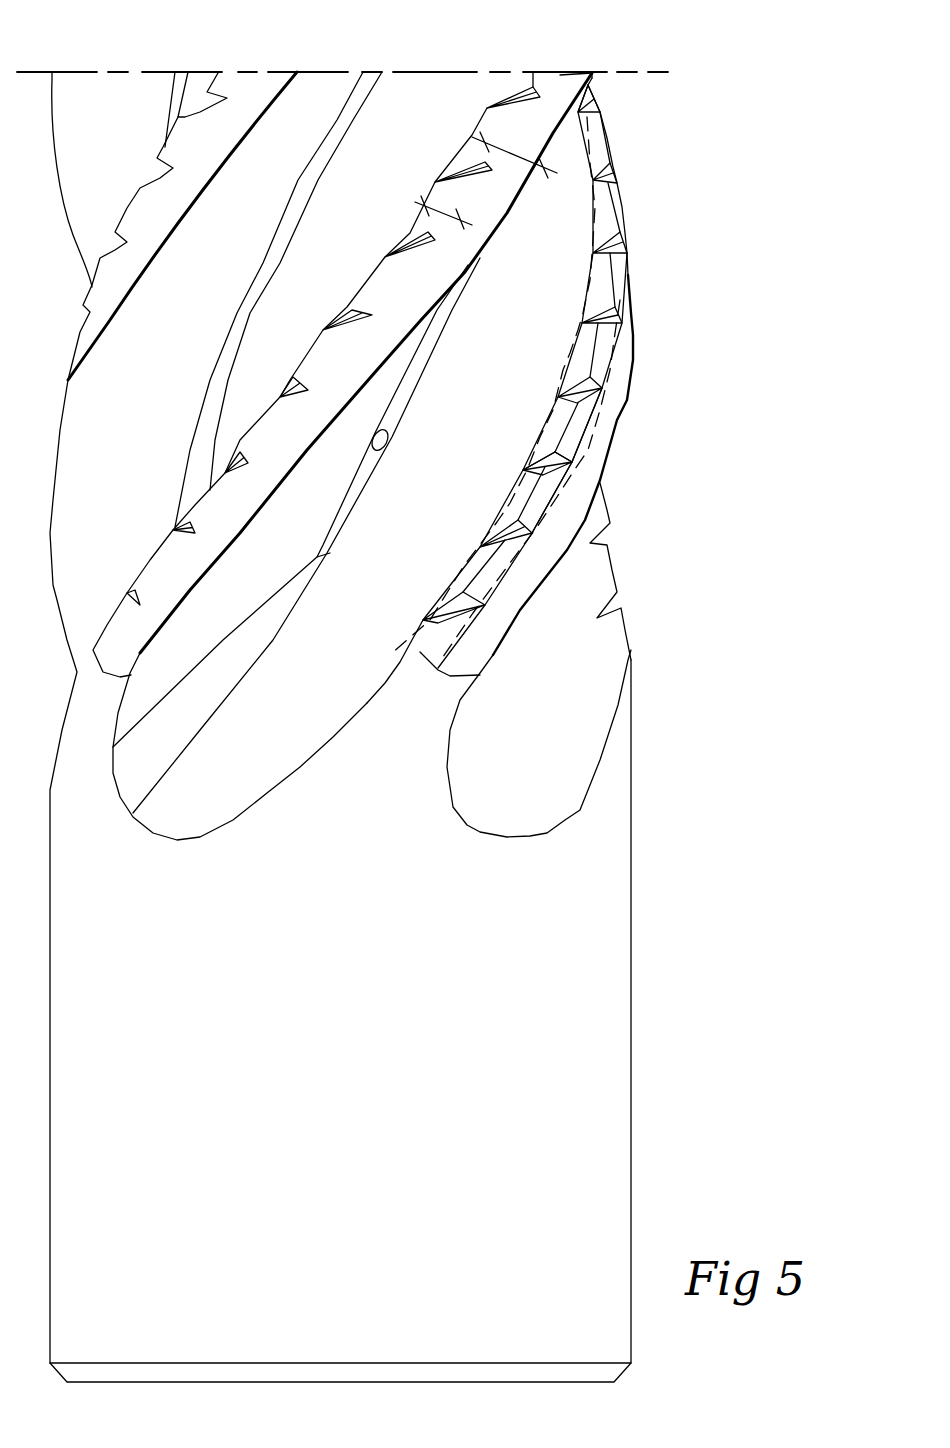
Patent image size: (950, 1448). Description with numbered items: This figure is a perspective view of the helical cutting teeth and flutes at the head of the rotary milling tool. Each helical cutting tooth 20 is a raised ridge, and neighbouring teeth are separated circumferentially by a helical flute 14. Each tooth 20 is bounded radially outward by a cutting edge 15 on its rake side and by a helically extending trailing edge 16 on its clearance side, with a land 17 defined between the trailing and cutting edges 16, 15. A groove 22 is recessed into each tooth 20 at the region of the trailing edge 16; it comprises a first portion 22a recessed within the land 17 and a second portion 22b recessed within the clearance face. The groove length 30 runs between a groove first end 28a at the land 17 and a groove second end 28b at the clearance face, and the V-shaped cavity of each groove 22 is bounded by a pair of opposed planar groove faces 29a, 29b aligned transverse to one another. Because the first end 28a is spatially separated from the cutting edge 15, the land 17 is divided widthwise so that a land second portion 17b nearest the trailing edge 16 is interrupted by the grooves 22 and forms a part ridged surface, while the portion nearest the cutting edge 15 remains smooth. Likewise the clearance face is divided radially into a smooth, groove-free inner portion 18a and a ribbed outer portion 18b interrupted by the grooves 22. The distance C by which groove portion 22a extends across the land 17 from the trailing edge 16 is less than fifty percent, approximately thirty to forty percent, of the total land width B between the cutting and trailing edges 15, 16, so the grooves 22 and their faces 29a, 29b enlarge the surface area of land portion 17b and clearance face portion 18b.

The helical flute 14 is at (180, 815).
The cutting edge 15 is at (572, 130).
The trailing edge 16 is at (482, 158).
The land 17 is at (557, 78).
The land second portion 17b is at (608, 348).
The clearance face first radially inner portion 18a is at (537, 331).
The clearance face second radially outer portion 18b is at (600, 280).
The helical cutting tooth 20 is at (443, 677).
The groove 22 is at (620, 397).
The groove first portion 22a is at (441, 262).
The groove second portion 22b is at (385, 228).
The groove first end 28a is at (578, 452).
The groove second end 28b is at (523, 470).
The groove face 29a is at (553, 467).
The groove face 29b is at (556, 456).
The groove length 30 is at (347, 310).
The total width of land B is at (515, 148).
The distance C is at (443, 221).